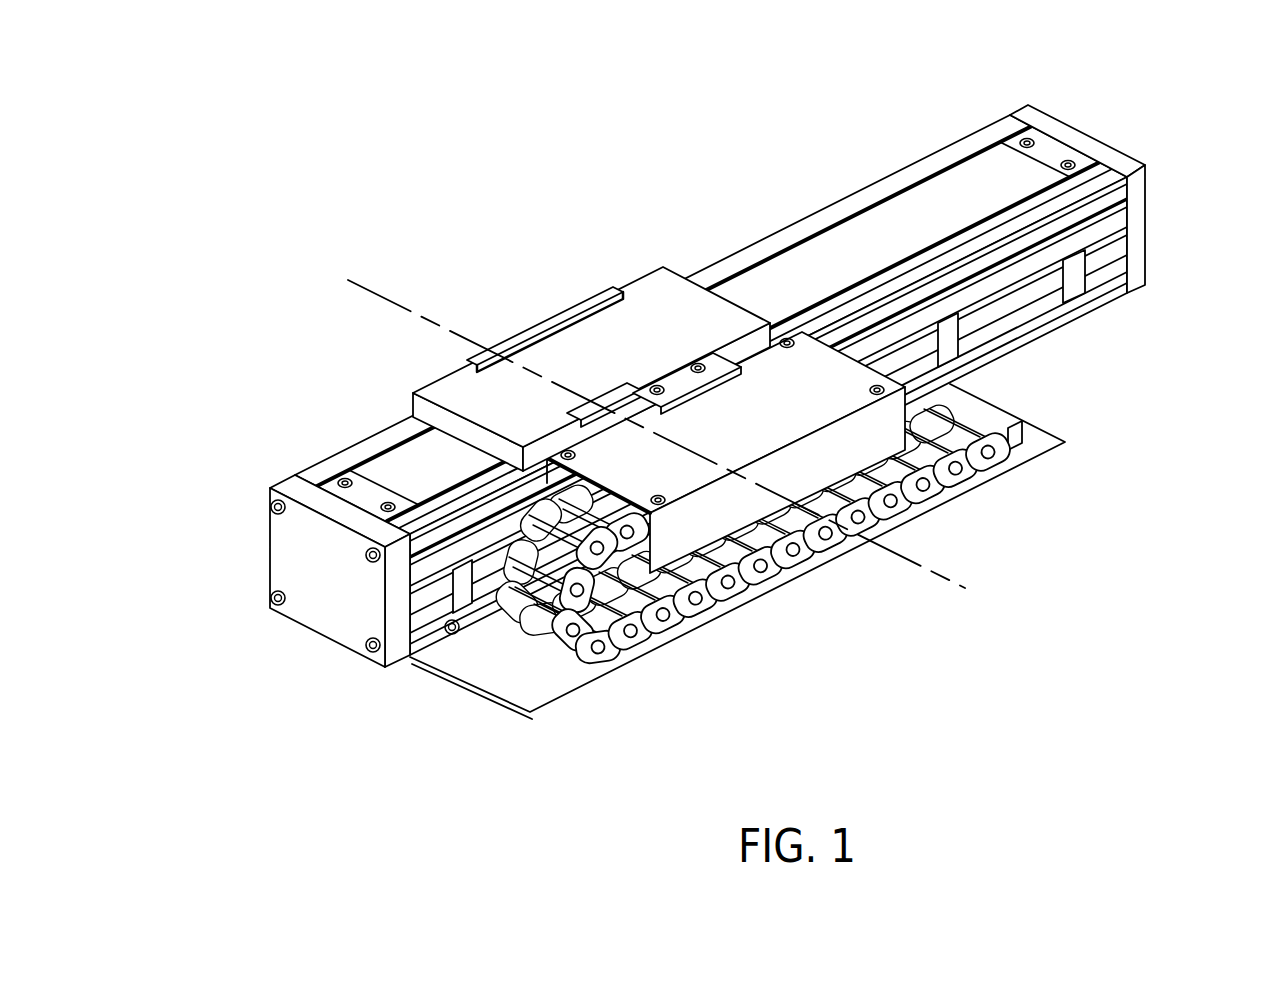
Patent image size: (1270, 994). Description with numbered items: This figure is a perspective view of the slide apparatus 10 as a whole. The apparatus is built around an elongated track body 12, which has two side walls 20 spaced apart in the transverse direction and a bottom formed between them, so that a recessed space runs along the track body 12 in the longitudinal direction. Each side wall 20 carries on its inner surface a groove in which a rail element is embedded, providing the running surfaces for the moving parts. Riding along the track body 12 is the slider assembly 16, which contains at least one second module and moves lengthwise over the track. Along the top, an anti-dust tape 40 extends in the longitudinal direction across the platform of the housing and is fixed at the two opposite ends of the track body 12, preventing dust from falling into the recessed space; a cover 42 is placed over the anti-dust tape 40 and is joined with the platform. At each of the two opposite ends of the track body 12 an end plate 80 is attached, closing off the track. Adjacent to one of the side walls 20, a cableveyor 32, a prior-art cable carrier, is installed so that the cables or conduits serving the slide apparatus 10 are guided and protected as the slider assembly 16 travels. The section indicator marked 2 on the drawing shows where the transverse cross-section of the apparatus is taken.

The slide apparatus 10 is at (405, 672).
The track body 12 is at (1060, 360).
The slider assembly 16 is at (812, 197).
The side wall 20 is at (1038, 290).
The cableveyor 32 is at (753, 372).
The anti-dust tape 40 is at (962, 178).
The cover 42 is at (635, 330).
The end plate 80 is at (1137, 213).
The section line 2- 2 is at (366, 308).